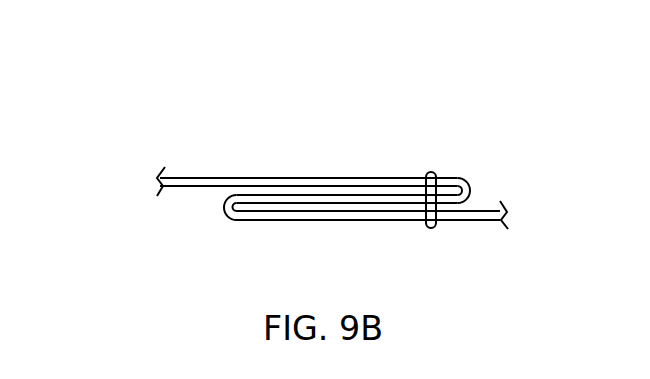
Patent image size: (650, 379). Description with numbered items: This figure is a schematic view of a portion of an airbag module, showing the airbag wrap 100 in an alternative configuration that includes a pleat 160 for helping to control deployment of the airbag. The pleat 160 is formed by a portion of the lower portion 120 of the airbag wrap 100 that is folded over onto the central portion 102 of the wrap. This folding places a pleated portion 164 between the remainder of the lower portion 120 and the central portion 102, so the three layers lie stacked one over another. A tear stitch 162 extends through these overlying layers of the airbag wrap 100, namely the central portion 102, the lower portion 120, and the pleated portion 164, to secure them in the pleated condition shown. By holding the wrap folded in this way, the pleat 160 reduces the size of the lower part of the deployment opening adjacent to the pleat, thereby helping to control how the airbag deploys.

The airbag wrap 100 is at (153, 107).
The central portion 102 is at (365, 218).
The lower portion 120 is at (273, 183).
The pleat 160 is at (425, 107).
The tear stitch 162 is at (433, 170).
The pleated portion 164 is at (335, 201).